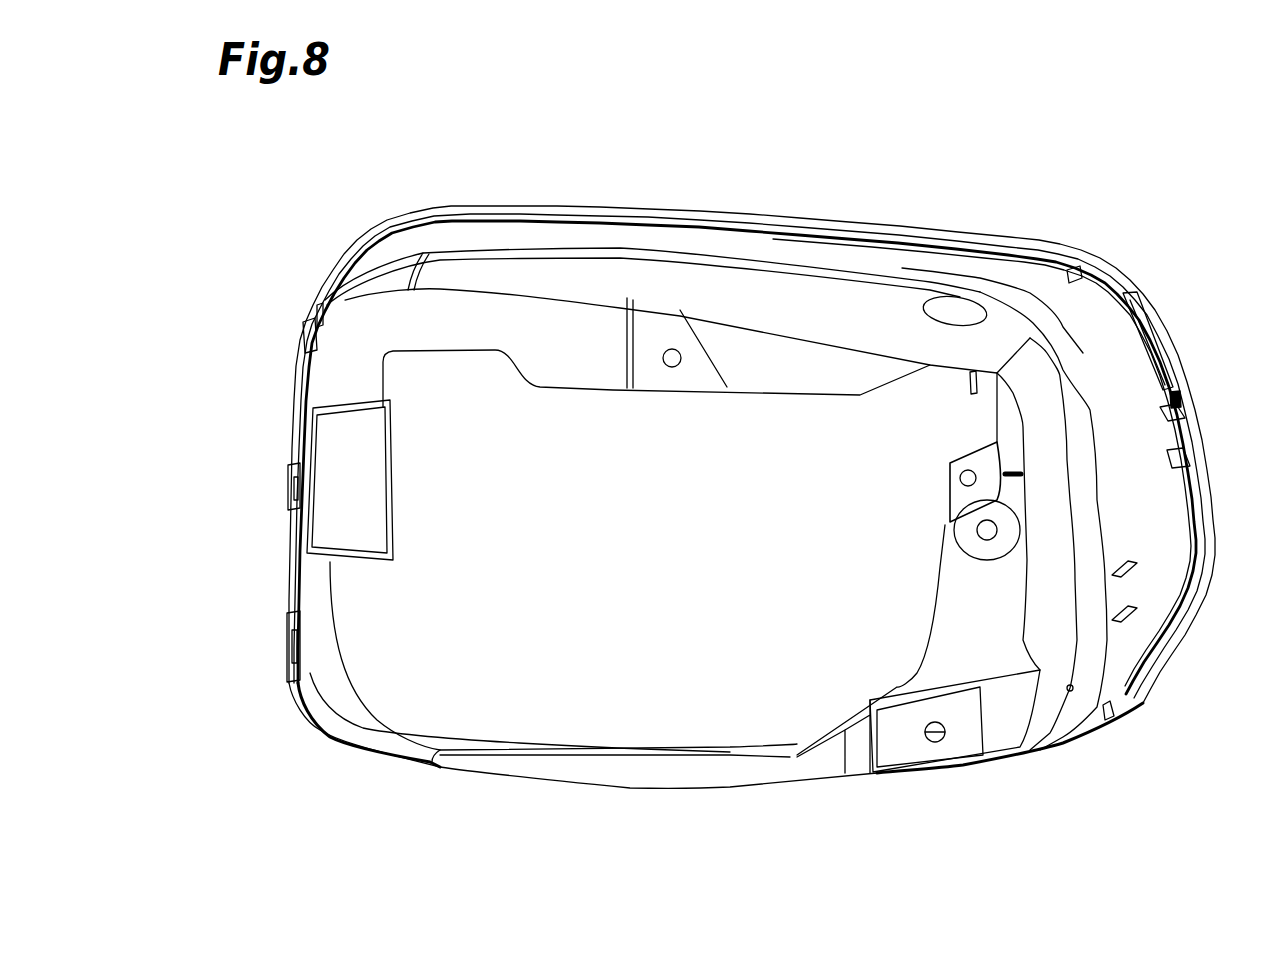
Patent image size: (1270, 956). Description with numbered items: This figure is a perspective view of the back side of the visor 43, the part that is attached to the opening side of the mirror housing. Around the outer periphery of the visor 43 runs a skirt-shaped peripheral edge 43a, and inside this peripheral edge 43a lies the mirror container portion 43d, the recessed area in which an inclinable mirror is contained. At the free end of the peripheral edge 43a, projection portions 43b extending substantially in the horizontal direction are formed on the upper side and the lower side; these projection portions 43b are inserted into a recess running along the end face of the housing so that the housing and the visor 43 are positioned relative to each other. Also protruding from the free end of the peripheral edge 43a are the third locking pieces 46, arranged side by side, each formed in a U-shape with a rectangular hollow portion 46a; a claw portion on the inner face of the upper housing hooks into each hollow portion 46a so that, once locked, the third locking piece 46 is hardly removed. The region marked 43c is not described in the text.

The visor 43 is at (340, 250).
The peripheral edge 43a is at (1000, 238).
The projection portion 43b is at (817, 232).
The upper inner wall 43c is at (978, 250).
The mirror container portion 43d is at (1050, 613).
The third locking piece 46 is at (303, 342).
The hollow portion 46a is at (322, 323).